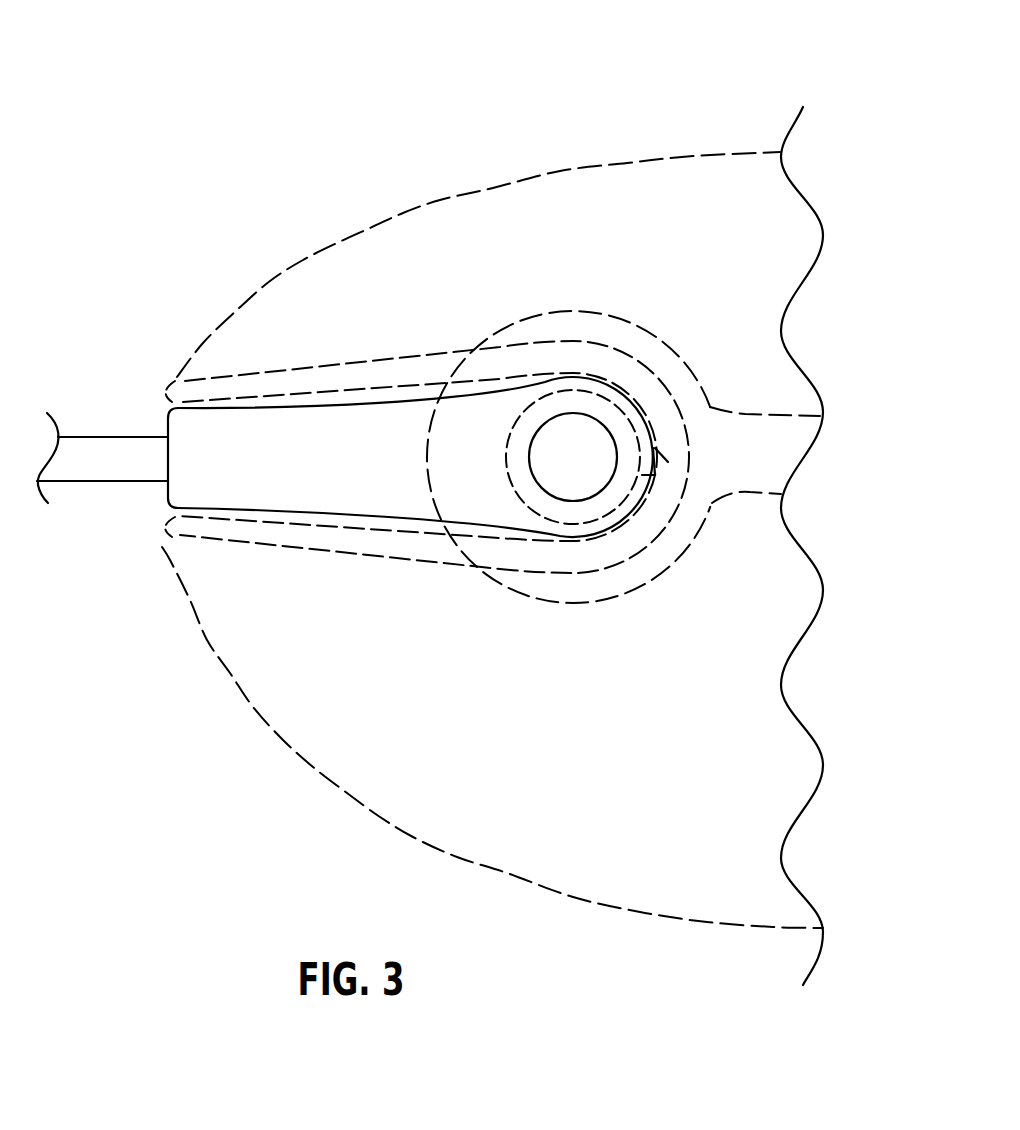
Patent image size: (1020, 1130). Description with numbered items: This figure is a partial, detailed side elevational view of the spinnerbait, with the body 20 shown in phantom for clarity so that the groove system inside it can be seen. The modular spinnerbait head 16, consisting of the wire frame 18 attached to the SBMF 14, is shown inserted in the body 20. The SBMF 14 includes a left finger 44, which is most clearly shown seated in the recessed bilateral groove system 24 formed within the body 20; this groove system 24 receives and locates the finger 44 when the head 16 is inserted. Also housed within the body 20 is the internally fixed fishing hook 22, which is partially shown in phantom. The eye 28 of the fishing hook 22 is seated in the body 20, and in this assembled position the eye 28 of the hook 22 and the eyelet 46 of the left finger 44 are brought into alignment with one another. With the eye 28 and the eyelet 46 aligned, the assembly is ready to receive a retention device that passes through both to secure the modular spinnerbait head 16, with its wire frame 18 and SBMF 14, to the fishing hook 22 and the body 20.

The SBMF 14 is at (331, 522).
The modular spinnerbait head 16 is at (183, 117).
The wire frame 18 is at (87, 465).
The body 20 is at (727, 925).
The internally fixed fishing hook 22 is at (773, 453).
The recessed bilateral groove system 24 is at (367, 542).
The eye 28 is at (573, 457).
The left finger 44 is at (207, 467).
The eyelet 46 is at (633, 457).